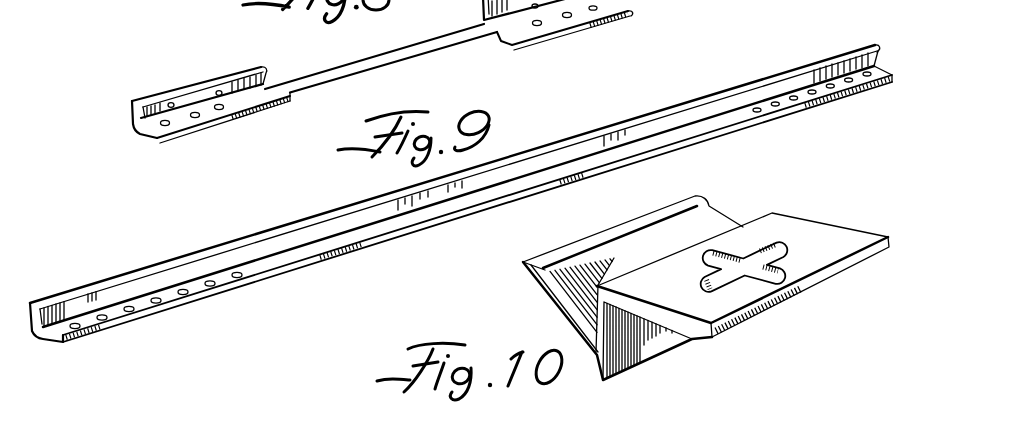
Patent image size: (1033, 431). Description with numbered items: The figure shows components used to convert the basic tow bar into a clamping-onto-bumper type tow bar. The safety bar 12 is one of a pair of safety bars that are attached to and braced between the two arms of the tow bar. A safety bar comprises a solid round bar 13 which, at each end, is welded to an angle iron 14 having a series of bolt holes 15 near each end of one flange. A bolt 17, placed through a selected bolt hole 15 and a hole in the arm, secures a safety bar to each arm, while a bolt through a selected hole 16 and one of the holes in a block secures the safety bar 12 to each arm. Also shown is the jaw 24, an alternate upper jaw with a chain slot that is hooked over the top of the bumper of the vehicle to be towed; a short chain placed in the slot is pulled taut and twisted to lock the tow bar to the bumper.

In FIG. 10, the safety bar 12 is at (352, 266).
In FIG. 9, the solid round bar 13 is at (343, 76).
In FIG. 9, the angle iron 14 is at (447, 52).
In FIG. 9, the bolt holes 15 is at (219, 106).
In FIG. 10, the hole 16 is at (206, 287).
In FIG. 9, the bolt 17 is at (200, 80).
In FIG. 10, the jaw 24 is at (843, 219).